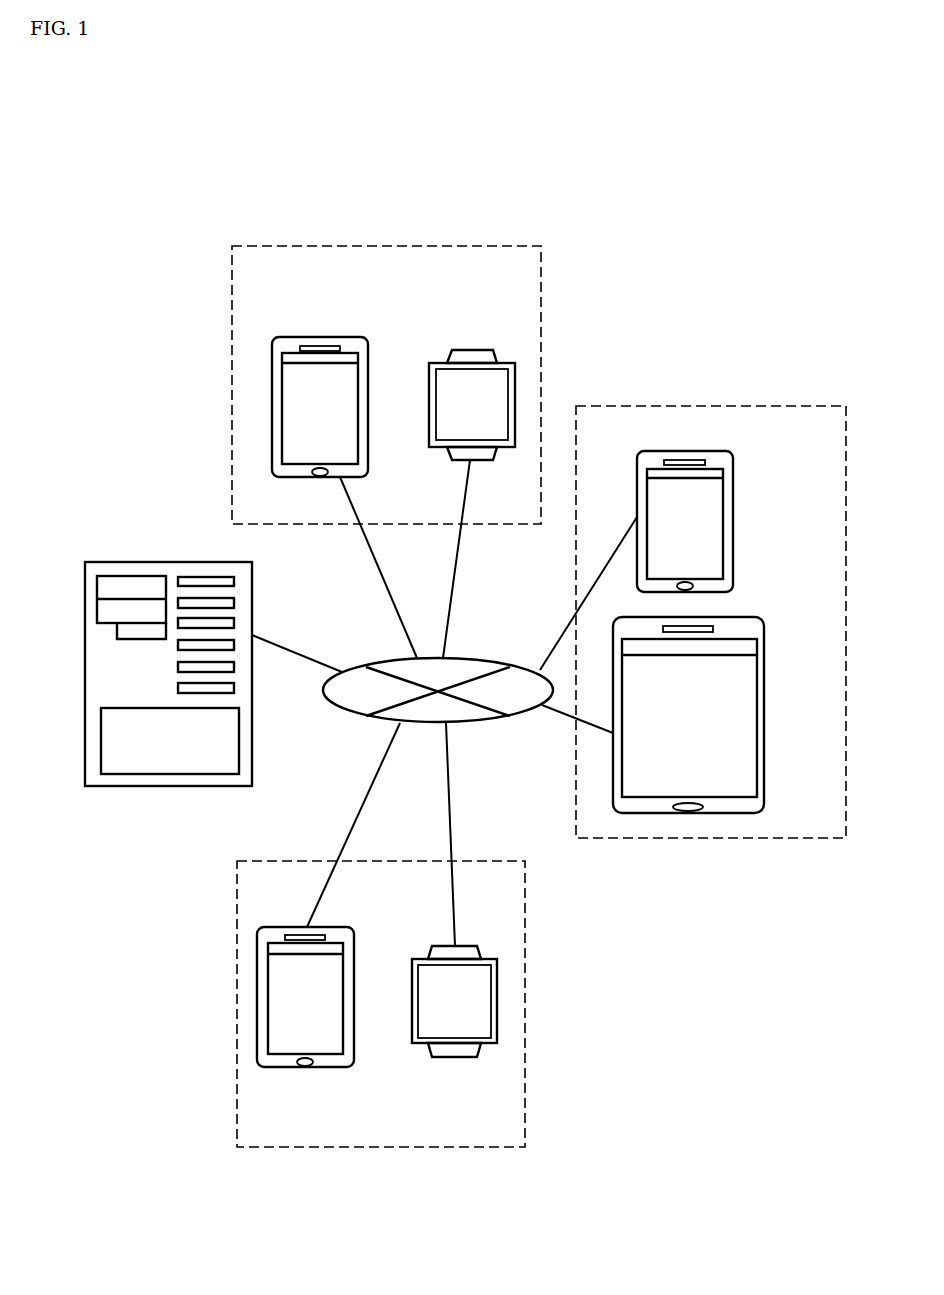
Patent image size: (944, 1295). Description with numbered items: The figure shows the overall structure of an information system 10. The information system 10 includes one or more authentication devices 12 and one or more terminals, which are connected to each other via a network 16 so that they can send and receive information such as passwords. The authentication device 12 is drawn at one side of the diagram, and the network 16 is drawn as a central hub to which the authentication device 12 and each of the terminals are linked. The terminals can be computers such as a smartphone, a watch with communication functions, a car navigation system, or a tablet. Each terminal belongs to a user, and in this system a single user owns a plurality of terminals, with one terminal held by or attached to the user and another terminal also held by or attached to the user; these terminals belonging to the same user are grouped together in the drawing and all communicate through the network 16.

The information system 10 is at (736, 222).
The authentication device 12 is at (185, 562).
The network 16 is at (472, 658).